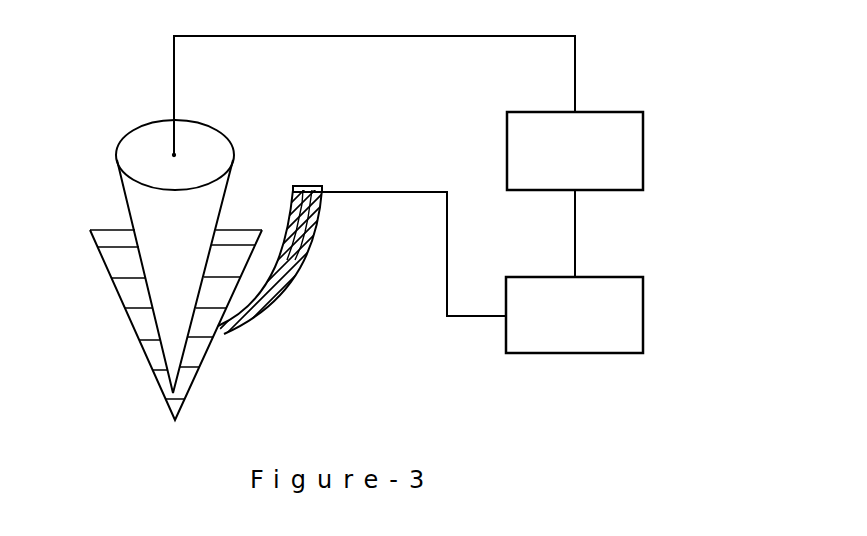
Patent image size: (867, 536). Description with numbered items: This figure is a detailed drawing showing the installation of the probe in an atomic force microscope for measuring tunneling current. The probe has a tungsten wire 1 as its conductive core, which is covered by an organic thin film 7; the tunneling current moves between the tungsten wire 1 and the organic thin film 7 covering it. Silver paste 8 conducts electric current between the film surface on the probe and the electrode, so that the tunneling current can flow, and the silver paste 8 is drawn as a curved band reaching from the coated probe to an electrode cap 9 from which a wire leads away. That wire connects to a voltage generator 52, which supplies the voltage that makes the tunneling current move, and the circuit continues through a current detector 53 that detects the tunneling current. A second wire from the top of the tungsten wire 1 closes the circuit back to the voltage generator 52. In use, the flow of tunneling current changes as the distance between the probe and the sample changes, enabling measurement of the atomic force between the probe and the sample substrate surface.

The tungsten wire 1 is at (145, 138).
The organic thin film 7 is at (123, 327).
The silver paste 8 is at (272, 287).
The brush electrode cap 9 is at (305, 186).
The voltage generator 52 is at (615, 110).
The current detector 53 is at (623, 277).